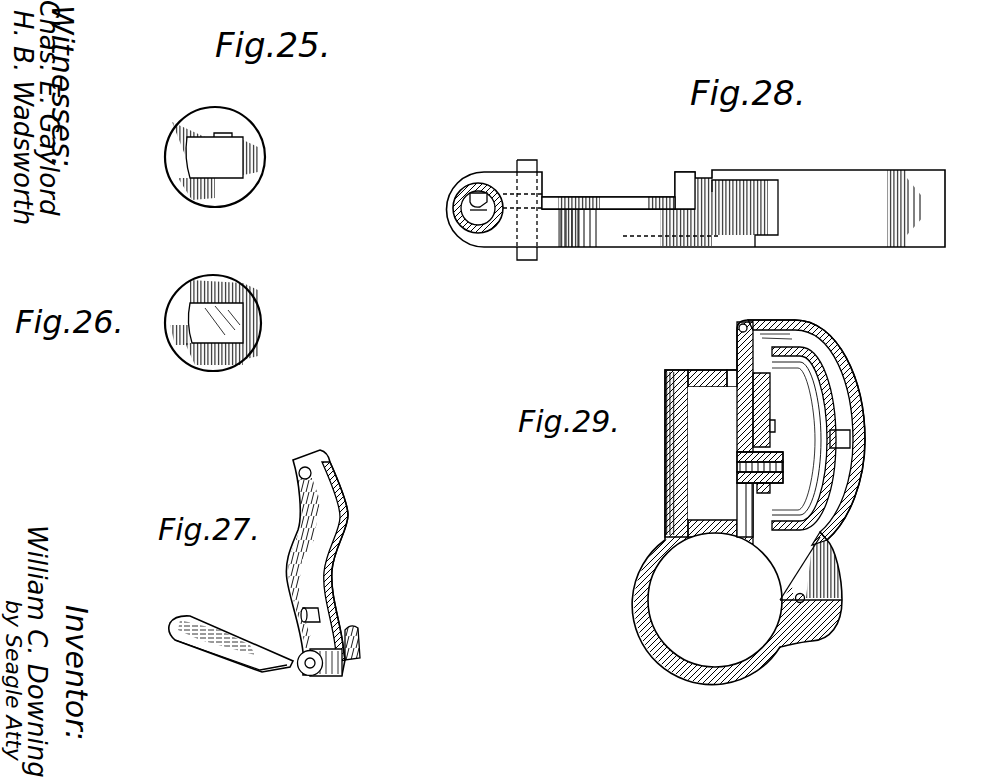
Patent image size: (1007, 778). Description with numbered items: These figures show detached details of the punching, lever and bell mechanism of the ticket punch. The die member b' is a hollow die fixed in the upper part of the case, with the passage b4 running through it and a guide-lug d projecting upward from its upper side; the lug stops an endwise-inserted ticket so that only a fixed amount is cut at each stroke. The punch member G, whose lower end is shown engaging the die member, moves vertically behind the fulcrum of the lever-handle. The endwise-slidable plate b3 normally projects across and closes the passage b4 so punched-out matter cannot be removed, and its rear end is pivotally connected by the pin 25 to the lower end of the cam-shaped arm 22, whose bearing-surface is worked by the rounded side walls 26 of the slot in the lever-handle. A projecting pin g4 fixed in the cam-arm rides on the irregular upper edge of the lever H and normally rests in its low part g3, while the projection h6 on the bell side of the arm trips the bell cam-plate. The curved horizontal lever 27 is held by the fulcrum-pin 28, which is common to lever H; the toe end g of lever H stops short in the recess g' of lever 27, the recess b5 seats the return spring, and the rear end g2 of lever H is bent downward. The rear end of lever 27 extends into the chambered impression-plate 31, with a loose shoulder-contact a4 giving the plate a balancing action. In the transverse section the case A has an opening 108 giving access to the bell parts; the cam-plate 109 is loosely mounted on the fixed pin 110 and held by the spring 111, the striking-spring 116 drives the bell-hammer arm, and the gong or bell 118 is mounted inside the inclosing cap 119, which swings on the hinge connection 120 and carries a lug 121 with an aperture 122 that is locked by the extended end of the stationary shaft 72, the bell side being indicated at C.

In FIG. 25, the guide-lug d is at (228, 134).
In FIG. 25, the die member b' is at (201, 162).
In FIG. 25, the passage b4 is at (225, 170).
In FIG. 26, the punch member G is at (262, 316).
In FIG. 27, the cam-shaped arm 22 is at (325, 535).
In FIG. 27, the side walls of the slot 26 is at (342, 520).
In FIG. 27, the projecting pin g4 is at (300, 616).
In FIG. 27, the projection h6 is at (354, 645).
In FIG. 27, the endwise-slidable plate b3 is at (210, 642).
In FIG. 27, the pin 25 is at (310, 667).
In FIG. 28, the curved horizontal lever 27 is at (625, 230).
In FIG. 28, the fulcrum-pin 28 is at (530, 260).
In FIG. 28, the chambered impression-plate 31 is at (871, 208).
In FIG. 28, the loose shoulder-contact a4 is at (775, 210).
In FIG. 28, the rear end of lever H g2 is at (684, 180).
In FIG. 28, the lever H is at (602, 203).
In FIG. 28, the low part g3 is at (572, 202).
In FIG. 28, the toe end g is at (456, 226).
In FIG. 28, the recess g' is at (457, 179).
In FIG. 28, the recess b5 is at (478, 222).
In FIG. 29, the cap end A is at (734, 502).
In FIG. 29, the barrel C is at (715, 683).
In FIG. 29, the opening 108 is at (765, 560).
In FIG. 29, the inclosing cap 119 is at (852, 495).
In FIG. 29, the gong or bell 118 is at (832, 390).
In FIG. 29, the striking-spring 116 is at (755, 375).
In FIG. 29, the hinge connection 120 is at (738, 328).
In FIG. 29, the spring 111 is at (772, 448).
In FIG. 29, the cam-plate 109 is at (755, 460).
In FIG. 29, the fixed pin 110 is at (738, 468).
In FIG. 29, the lug 121 is at (823, 590).
In FIG. 29, the aperture 122 is at (806, 604).
In FIG. 29, the stationary shaft 72 is at (795, 602).